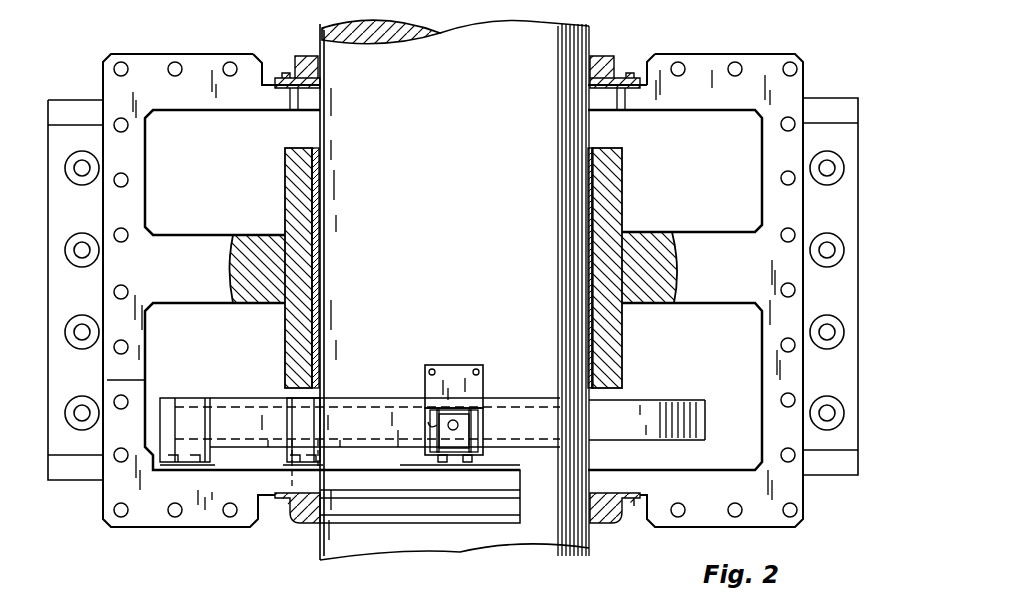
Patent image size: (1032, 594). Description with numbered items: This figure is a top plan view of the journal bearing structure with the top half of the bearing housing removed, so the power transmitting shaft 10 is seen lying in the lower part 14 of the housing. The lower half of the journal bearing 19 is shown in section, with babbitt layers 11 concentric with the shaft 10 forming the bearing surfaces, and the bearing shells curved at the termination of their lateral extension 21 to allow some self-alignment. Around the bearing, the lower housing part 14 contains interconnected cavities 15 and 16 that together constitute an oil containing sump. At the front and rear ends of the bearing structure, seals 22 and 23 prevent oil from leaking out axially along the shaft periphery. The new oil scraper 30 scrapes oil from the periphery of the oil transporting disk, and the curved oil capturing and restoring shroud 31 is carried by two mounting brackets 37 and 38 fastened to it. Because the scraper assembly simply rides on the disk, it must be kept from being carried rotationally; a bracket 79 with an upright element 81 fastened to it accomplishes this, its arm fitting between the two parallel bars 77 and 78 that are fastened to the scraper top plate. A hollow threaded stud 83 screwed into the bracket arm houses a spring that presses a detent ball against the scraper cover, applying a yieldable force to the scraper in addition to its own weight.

The power transmitting shaft 10 is at (470, 126).
The babbitt layers 11 is at (317, 249).
The lower part of housing 14 is at (797, 483).
The cavity 15 is at (690, 453).
The cavity 16 is at (160, 335).
The lower half of the journal bearing 19 is at (657, 210).
The lateral extension of bearing shells 21 is at (679, 268).
The seal 22 is at (612, 66).
The seal 23 is at (600, 520).
The oil scraper 30 is at (465, 373).
The oil capturing and restoring shroud 31 is at (347, 392).
The mounting bracket 37 is at (193, 404).
The mounting bracket 38 is at (292, 418).
The parallel bar 77 is at (428, 422).
The parallel bar 78 is at (486, 433).
The bracket 79 is at (470, 404).
The upright element 81 is at (475, 465).
The threaded stud 83 is at (454, 420).